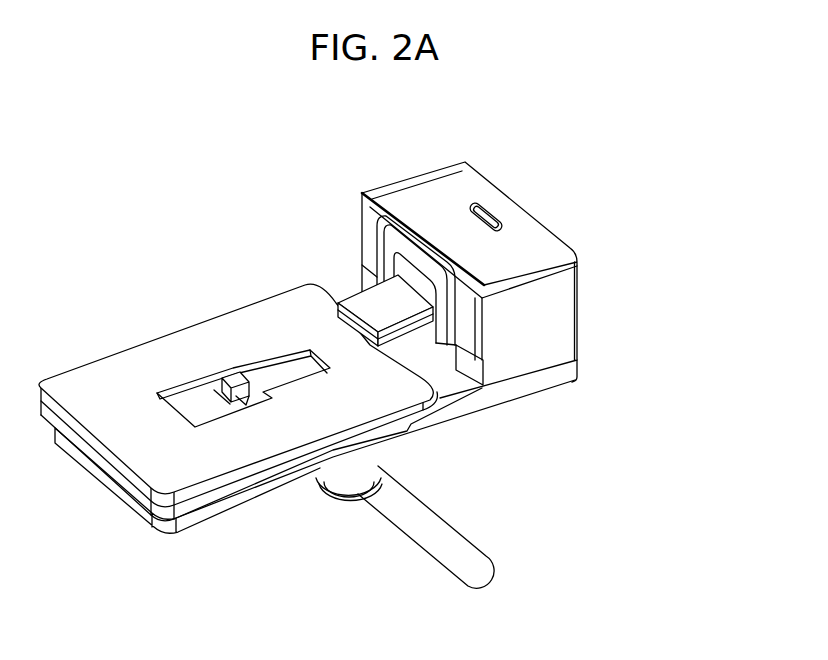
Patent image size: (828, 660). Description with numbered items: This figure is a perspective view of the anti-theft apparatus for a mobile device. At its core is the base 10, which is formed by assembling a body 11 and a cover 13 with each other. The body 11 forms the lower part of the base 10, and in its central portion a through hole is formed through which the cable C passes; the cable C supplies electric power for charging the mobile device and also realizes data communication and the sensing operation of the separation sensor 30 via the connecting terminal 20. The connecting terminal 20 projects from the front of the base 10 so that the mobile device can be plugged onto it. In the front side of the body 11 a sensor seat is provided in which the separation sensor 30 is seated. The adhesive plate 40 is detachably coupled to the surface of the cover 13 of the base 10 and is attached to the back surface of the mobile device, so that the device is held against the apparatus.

The base 10 is at (537, 280).
The body 11 is at (565, 368).
The cover 13 is at (565, 328).
The connecting terminal 20 is at (378, 305).
The separation sensor 30 is at (214, 393).
The adhesive plate 40 is at (203, 498).
The cable C is at (430, 532).